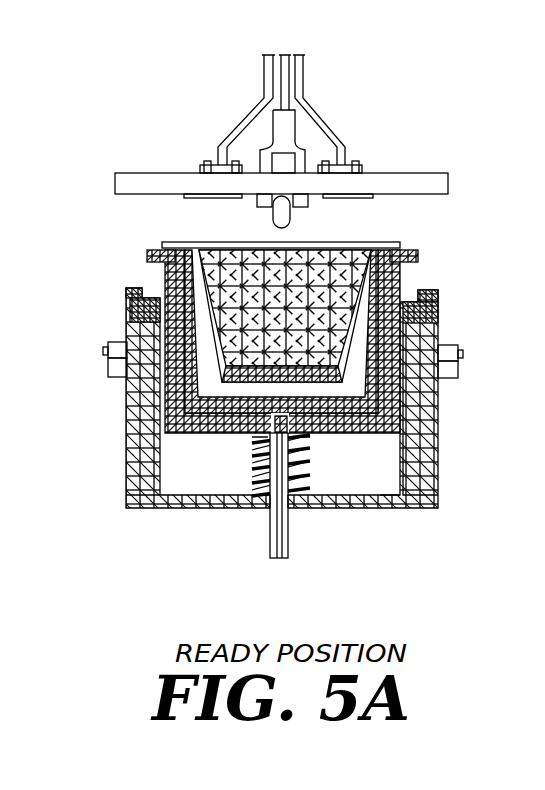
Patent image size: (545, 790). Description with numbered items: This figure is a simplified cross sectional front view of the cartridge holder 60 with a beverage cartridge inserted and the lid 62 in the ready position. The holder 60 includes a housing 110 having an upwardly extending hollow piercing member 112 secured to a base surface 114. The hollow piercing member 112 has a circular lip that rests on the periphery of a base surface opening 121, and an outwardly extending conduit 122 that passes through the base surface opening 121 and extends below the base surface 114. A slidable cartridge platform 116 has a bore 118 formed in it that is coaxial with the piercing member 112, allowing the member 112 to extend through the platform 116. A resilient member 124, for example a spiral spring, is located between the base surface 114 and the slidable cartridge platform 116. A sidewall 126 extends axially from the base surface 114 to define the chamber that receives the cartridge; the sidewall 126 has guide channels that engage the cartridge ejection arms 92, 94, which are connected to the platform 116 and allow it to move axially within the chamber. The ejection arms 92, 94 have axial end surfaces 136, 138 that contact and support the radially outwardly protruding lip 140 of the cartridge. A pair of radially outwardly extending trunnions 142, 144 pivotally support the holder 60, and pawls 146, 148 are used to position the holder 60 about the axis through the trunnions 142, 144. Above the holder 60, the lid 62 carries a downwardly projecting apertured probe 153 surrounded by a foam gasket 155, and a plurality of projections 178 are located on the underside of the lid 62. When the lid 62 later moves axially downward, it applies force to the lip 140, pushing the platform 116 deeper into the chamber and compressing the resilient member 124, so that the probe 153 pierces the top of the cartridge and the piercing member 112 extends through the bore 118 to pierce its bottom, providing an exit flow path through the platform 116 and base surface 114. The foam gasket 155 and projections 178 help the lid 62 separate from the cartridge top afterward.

The lid 62 is at (442, 174).
The projections 178 is at (206, 197).
The foam gasket 155 is at (262, 199).
The downwardly projecting apertured probe 153 is at (291, 213).
The radially outwardly protruding lip 140 is at (393, 242).
The axial end surface 136 is at (158, 244).
The axial end surface 138 is at (412, 251).
The cartridge ejection arm 92 is at (147, 256).
The cartridge ejection arm 94 is at (418, 258).
The cartridge holder 60 is at (443, 428).
The housing 110 is at (425, 492).
The base surface 114 is at (205, 510).
The sidewall 126 is at (387, 494).
The trunnion 142 is at (103, 350).
The pawl 146 is at (110, 369).
The pawl 148 is at (448, 347).
The trunnion 144 is at (463, 353).
The slidable cartridge platform 116 is at (383, 436).
The bore 118 is at (290, 420).
The resilient member 124 is at (265, 473).
The hollow piercing member 112 is at (267, 456).
The outwardly extending conduit 122 is at (291, 513).
The base surface opening 121 is at (268, 513).